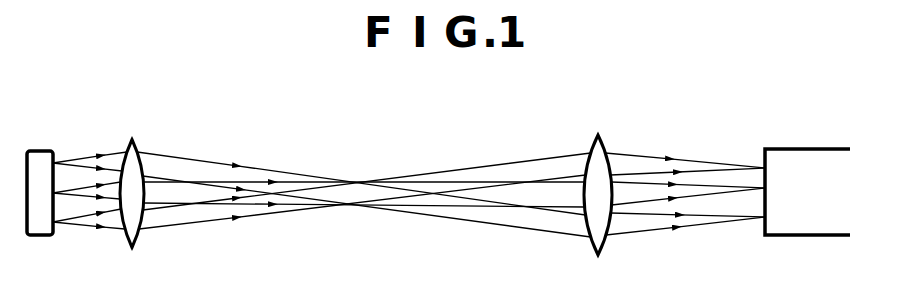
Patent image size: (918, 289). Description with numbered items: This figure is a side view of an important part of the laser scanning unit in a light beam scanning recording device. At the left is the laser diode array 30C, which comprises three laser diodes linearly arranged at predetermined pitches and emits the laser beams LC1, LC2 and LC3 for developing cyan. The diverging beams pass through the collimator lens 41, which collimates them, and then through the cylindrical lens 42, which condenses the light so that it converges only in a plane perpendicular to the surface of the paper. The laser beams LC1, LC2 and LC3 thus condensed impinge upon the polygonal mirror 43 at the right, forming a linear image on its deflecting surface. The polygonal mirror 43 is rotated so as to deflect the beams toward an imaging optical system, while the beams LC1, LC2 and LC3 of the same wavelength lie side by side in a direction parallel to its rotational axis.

The laser diode array 30C is at (53, 151).
The collimator lens 41 is at (133, 146).
The cylindrical lens 42 is at (602, 145).
The polygonal mirror 43 is at (797, 149).
The laser beam LC1 is at (219, 163).
The laser beam LC2 is at (299, 182).
The laser beam LC3 is at (265, 215).